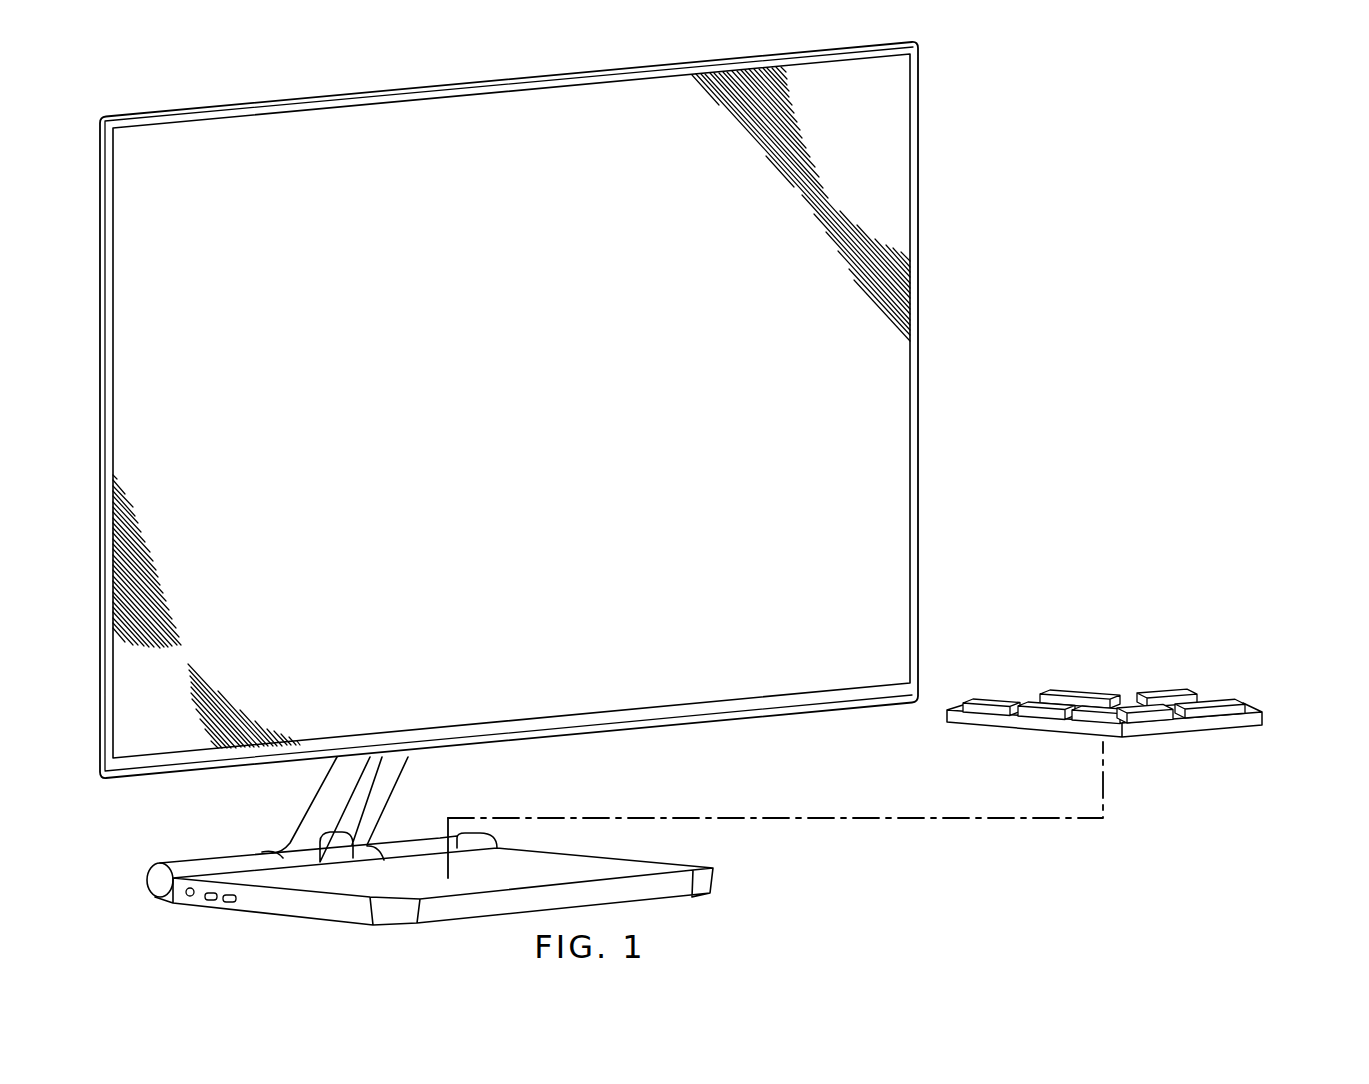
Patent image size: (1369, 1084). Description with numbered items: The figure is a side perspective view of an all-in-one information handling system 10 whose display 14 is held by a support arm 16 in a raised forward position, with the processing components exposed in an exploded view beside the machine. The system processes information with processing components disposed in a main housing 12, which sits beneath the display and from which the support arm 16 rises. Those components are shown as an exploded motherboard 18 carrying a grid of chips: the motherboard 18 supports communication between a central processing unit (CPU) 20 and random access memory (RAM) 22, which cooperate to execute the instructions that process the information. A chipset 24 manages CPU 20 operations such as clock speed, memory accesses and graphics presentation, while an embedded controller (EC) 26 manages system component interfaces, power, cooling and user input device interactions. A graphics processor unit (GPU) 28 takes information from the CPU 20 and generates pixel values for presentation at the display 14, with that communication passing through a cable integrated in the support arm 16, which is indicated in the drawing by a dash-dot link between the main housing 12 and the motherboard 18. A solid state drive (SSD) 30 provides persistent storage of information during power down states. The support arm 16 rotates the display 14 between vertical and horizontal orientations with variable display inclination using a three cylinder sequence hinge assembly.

The information handling system 10 is at (1118, 218).
The main housing 12 is at (714, 869).
The display 14 is at (918, 360).
The support arm 16 is at (431, 753).
The motherboard 18 is at (1195, 737).
The central processing unit (CPU) 20 is at (997, 705).
The random access memory (RAM) 22 is at (1078, 692).
The chipset 24 is at (1040, 712).
The embedded controller (EC) 26 is at (1150, 695).
The graphics processor unit (GPU) 28 is at (1163, 715).
The solid state drive (SSD) 30 is at (1217, 703).